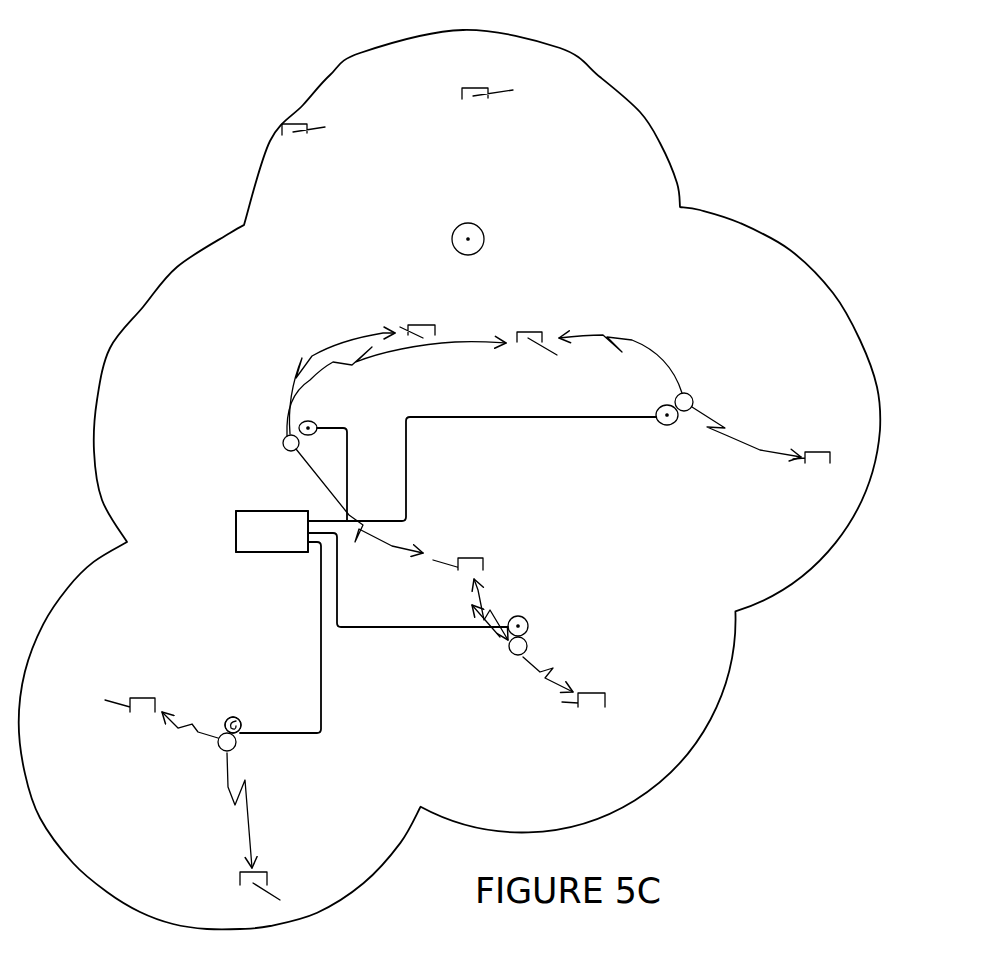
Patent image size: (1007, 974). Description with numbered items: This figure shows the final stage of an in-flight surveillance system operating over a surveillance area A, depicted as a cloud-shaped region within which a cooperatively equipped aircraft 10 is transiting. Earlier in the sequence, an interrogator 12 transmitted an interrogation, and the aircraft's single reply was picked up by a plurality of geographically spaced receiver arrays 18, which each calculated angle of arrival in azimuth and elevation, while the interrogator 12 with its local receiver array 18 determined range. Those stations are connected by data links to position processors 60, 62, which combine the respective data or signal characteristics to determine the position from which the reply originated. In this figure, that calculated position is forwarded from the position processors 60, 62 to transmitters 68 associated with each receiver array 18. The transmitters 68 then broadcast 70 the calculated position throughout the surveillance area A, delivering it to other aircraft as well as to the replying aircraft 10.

The surveillance area A is at (643, 110).
The aircraft 10 is at (480, 556).
The interrogator 12 is at (240, 720).
The receiver array 18 is at (324, 416).
The position processor 60 is at (243, 497).
The position processor 62 is at (246, 513).
The transmitter 68 is at (283, 449).
The broadcast 70 is at (338, 354).